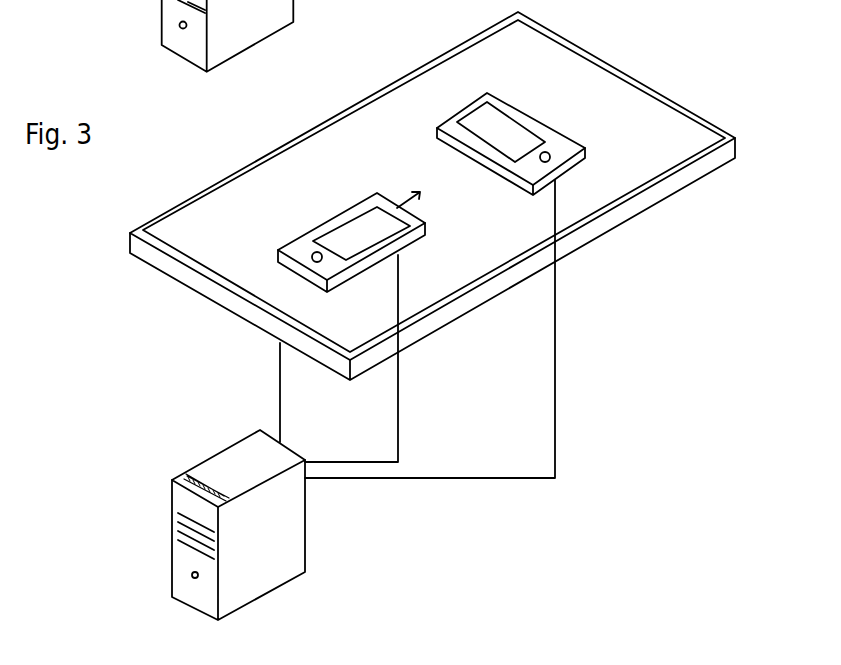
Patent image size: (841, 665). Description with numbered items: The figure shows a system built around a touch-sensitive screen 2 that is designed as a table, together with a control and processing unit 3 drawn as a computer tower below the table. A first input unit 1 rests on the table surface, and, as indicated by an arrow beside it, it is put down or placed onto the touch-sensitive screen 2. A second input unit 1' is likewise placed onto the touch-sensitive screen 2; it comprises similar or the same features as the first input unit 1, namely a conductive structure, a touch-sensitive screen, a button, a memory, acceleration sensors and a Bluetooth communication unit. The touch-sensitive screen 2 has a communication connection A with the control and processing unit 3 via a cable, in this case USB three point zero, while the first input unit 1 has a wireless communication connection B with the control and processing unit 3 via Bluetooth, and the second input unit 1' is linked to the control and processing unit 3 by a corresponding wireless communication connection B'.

The input unit 1 is at (351, 233).
The second input unit 1' is at (511, 136).
The touch-sensitive screen 2 is at (640, 103).
The control and processing unit 3 is at (305, 523).
The communication connection A is at (281, 405).
The wireless communication connection B is at (374, 358).
The wireless communication connection B' is at (458, 329).